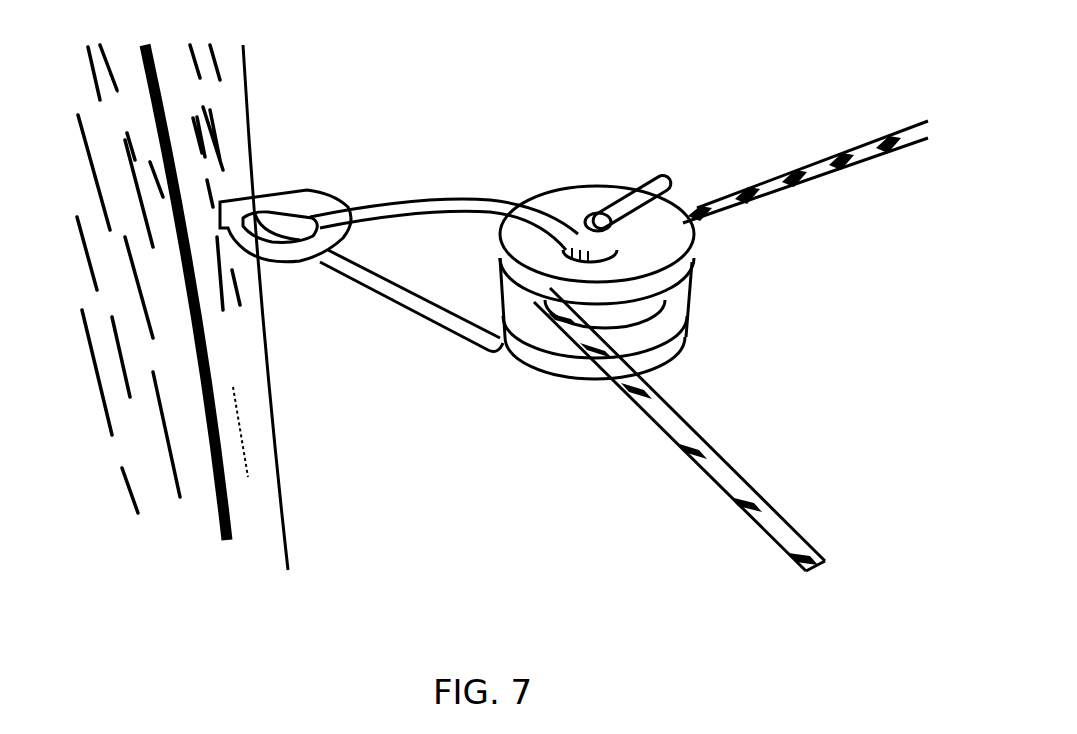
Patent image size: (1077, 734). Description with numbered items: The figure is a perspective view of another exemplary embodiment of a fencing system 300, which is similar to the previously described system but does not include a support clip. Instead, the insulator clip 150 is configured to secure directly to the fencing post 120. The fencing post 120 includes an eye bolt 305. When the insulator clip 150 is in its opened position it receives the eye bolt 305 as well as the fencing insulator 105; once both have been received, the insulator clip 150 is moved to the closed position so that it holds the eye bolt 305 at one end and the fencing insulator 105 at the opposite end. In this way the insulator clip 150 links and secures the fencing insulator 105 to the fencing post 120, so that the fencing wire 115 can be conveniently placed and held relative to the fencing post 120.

The fencing system 300 is at (531, 88).
The fencing post 120 is at (110, 125).
The eye bolt 305 is at (308, 192).
The insulator clip 150 is at (407, 316).
The fencing insulator 105 is at (655, 255).
The fencing wire 115 is at (657, 427).